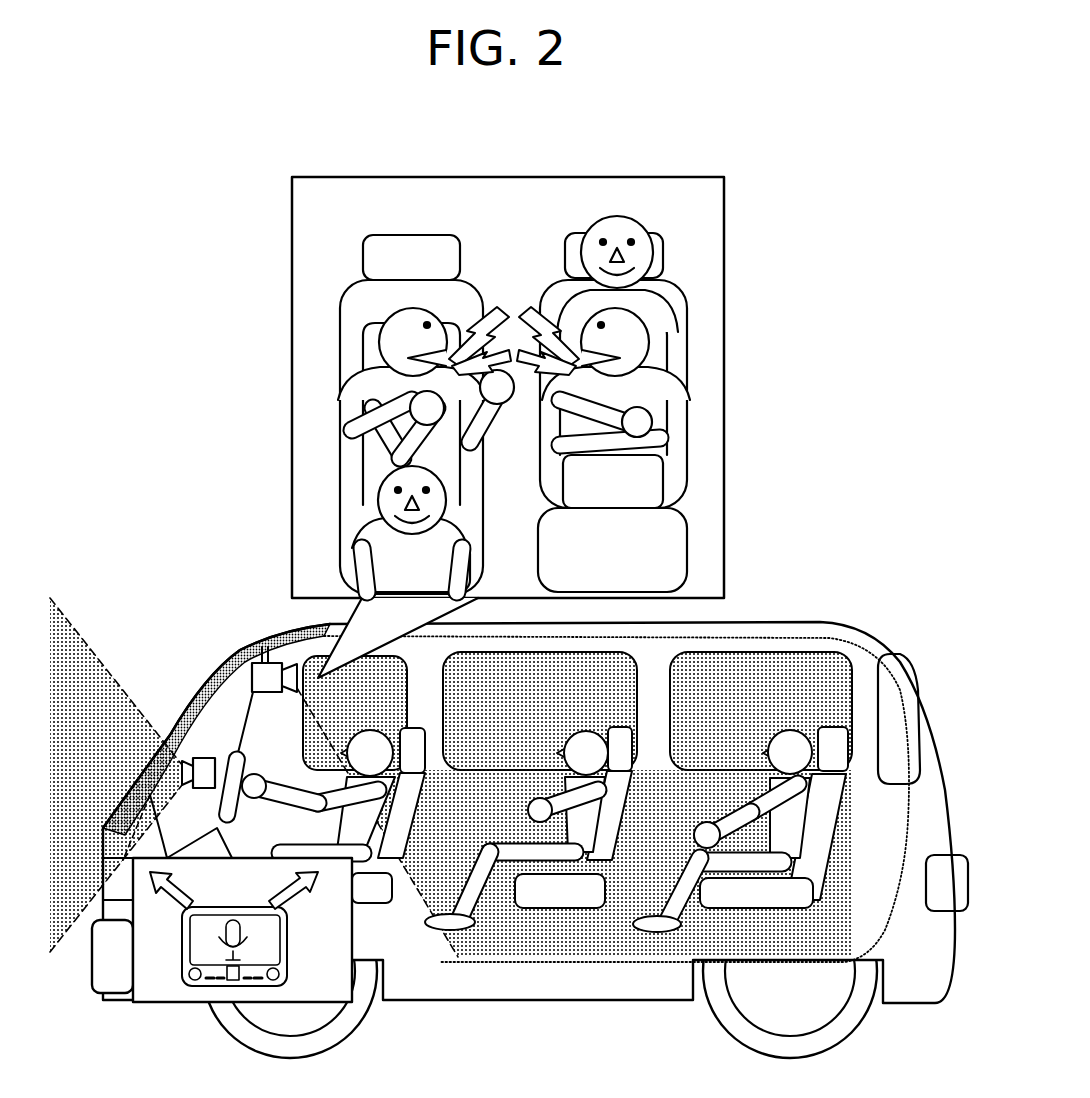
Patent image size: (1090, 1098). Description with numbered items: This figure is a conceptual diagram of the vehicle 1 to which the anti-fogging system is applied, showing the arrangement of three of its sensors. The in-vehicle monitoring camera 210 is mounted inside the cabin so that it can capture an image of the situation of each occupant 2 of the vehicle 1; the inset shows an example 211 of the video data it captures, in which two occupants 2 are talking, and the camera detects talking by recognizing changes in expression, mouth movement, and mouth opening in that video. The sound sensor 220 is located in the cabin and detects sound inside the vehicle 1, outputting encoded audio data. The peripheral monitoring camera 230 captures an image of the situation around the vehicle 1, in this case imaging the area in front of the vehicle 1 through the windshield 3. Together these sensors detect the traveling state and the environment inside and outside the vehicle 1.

The vehicle 1 is at (894, 584).
The occupant 2 is at (667, 295).
The windshield 3 is at (213, 678).
The in-vehicle monitoring camera 210 is at (266, 650).
The example of video data 211 is at (352, 220).
The sound sensor 220 is at (313, 956).
The peripheral monitoring camera 230 is at (190, 748).